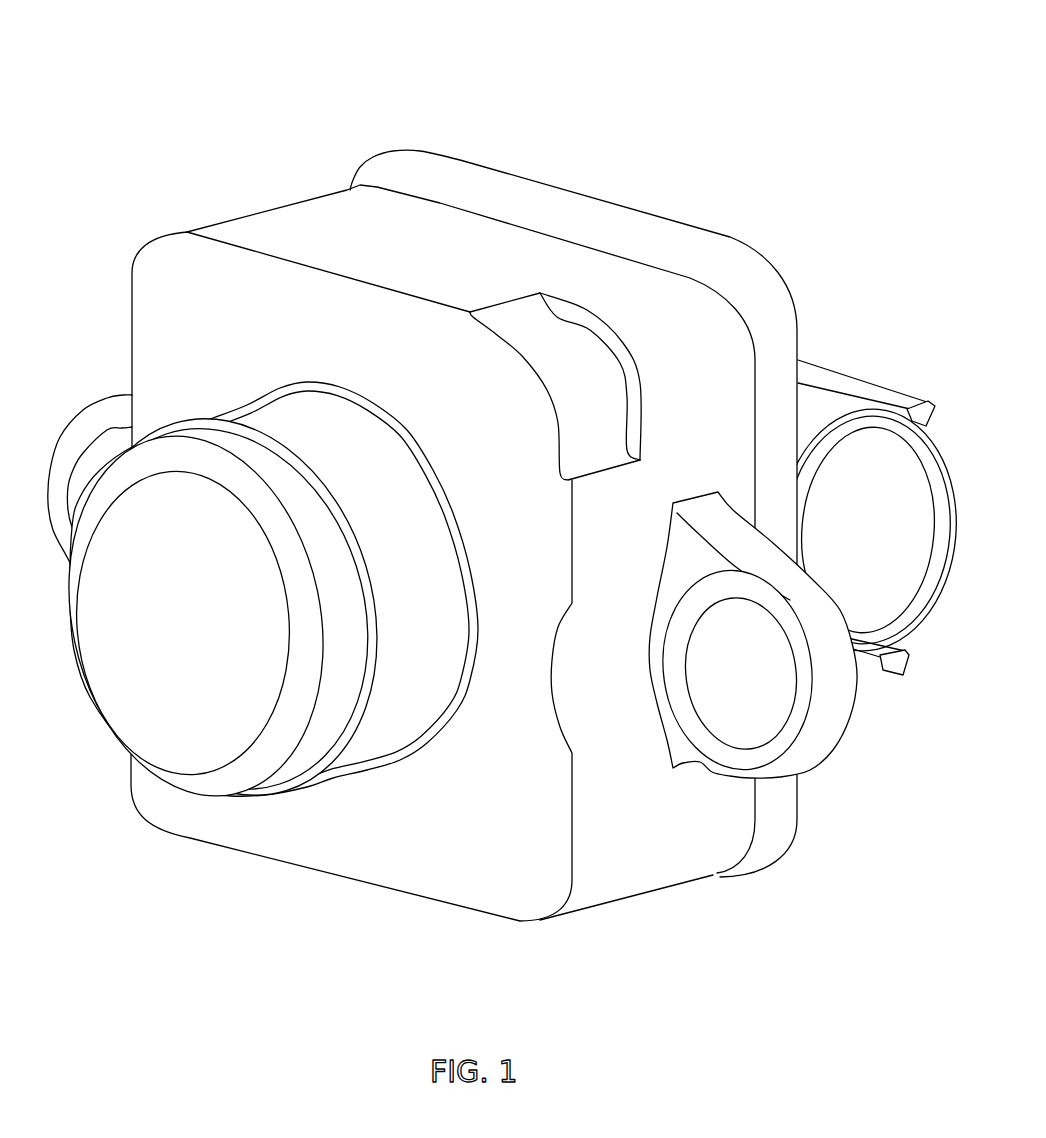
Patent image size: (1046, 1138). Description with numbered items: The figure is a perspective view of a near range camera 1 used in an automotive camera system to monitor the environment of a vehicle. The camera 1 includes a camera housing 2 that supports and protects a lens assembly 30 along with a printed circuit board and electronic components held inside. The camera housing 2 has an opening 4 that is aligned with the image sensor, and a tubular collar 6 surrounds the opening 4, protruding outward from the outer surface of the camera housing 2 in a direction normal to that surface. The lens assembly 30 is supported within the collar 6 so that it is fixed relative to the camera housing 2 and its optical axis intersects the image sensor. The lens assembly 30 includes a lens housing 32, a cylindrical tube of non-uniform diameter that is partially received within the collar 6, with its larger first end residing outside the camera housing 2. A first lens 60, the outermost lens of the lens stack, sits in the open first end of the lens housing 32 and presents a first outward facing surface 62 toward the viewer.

The near range camera 1 is at (240, 71).
The camera housing 2 is at (478, 230).
The opening 4 is at (440, 682).
The tubular collar 6 is at (428, 561).
The lens assembly 30 is at (277, 654).
The lens housing 32 is at (308, 758).
The first lens 60 is at (174, 622).
The first outward facing surface 62 is at (128, 675).